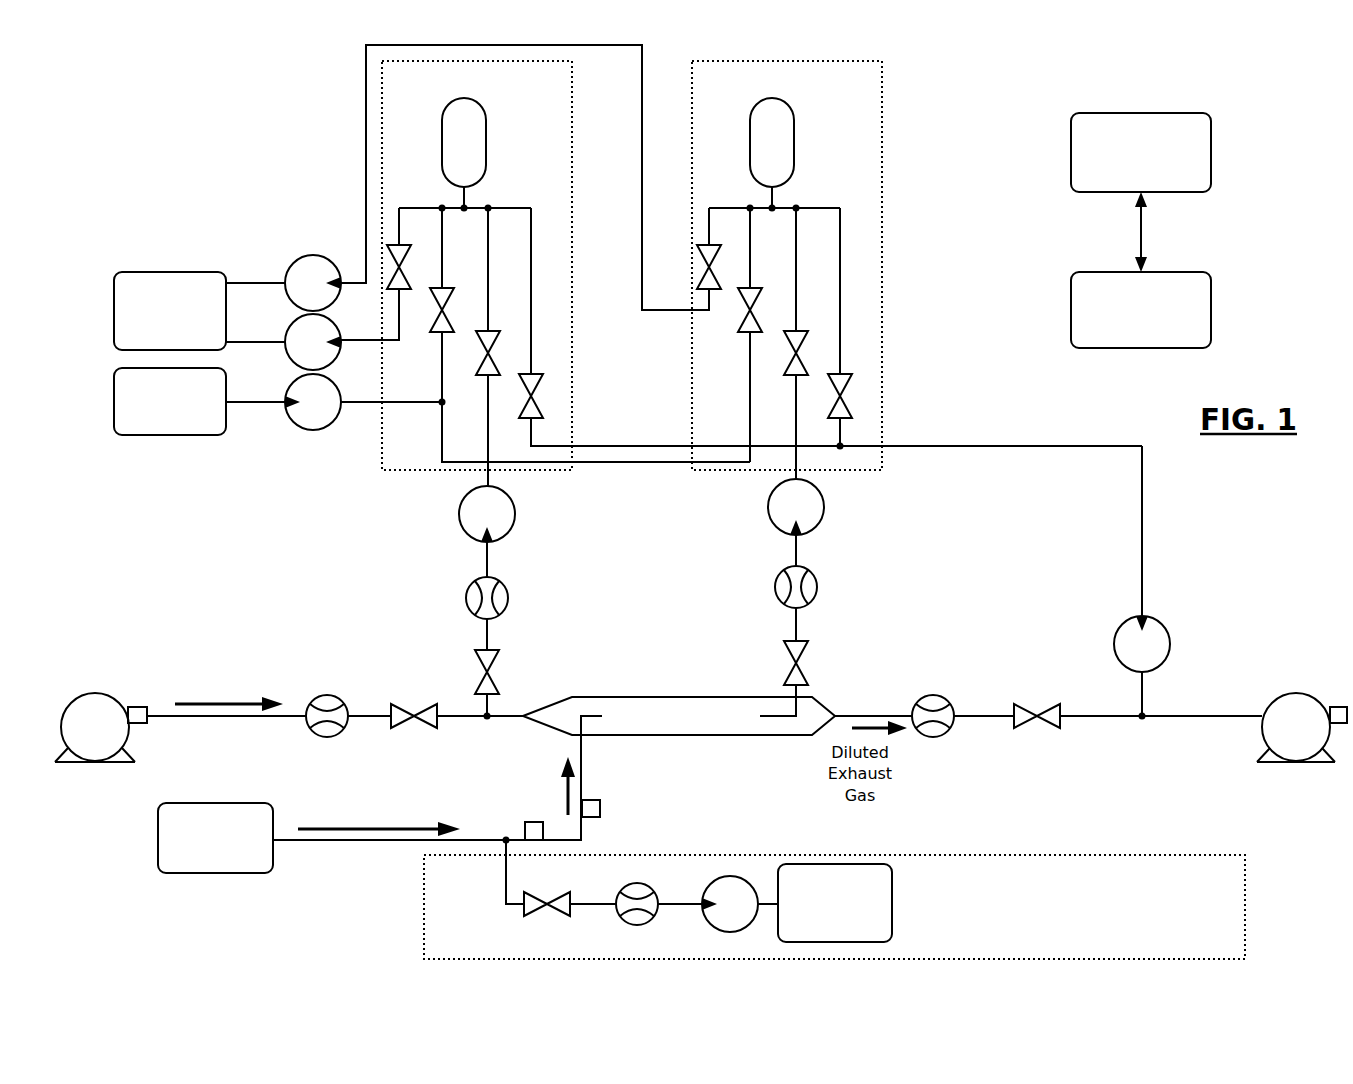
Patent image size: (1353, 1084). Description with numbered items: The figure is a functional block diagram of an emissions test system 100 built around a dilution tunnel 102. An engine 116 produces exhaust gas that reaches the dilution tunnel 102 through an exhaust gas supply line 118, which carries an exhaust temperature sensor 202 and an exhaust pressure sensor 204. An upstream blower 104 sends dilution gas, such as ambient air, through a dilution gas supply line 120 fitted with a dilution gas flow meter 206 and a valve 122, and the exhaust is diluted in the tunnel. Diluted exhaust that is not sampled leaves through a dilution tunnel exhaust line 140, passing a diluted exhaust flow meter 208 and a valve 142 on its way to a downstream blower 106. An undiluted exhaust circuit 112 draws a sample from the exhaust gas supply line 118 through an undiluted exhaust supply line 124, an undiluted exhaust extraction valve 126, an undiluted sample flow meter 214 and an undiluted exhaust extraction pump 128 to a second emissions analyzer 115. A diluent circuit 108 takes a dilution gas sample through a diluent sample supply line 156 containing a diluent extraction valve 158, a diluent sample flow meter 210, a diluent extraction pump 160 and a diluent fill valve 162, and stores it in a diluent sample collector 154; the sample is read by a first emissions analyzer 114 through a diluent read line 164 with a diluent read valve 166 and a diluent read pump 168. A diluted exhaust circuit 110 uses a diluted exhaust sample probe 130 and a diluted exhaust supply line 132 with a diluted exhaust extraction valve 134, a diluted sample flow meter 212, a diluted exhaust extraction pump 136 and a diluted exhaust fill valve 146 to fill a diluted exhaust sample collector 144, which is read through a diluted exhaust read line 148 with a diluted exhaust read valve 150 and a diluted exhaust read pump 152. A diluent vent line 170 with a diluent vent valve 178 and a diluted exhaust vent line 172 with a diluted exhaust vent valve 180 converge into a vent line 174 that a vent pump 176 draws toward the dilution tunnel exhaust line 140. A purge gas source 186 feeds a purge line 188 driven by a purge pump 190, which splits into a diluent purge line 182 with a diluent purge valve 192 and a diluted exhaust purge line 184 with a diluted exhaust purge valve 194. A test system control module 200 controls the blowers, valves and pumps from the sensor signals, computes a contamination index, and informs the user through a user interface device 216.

The emissions test system 100 is at (195, 66).
The dilution tunnel 102 is at (682, 693).
The upstream blower 104 is at (96, 693).
The downstream blower 106 is at (1275, 702).
The diluent circuit 108 is at (572, 112).
The diluted exhaust circuit 110 is at (882, 112).
The undiluted exhaust circuit 112 is at (1143, 854).
The first emissions analyzer 114 is at (168, 272).
The second emissions analyzer 115 is at (893, 883).
The engine 116 is at (222, 875).
The exhaust gas supply line 118 is at (373, 842).
The dilution gas supply line 120 is at (247, 717).
The valve 122 is at (405, 726).
The undiluted exhaust supply line 124 is at (505, 872).
The undiluted exhaust extraction valve 126 is at (523, 912).
The undiluted exhaust extraction pump 128 is at (707, 923).
The diluted exhaust sample probe 130 is at (780, 717).
The diluted exhaust supply line 132 is at (798, 552).
The diluted exhaust extraction valve 134 is at (805, 673).
The diluted exhaust extraction pump 136 is at (820, 500).
The dilution tunnel exhaust line 140 is at (1202, 718).
The valve 142 is at (1050, 728).
The diluted exhaust sample collector 144 is at (795, 158).
The diluted exhaust fill valve 146 is at (794, 377).
The diluted exhaust read line 148 is at (707, 302).
The diluted exhaust read valve 150 is at (703, 278).
The diluted exhaust read pump 152 is at (290, 257).
The diluent sample collector 154 is at (487, 158).
The diluent sample supply line 156 is at (482, 563).
The diluent extraction valve 158 is at (478, 683).
The diluent extraction pump 160 is at (460, 505).
The diluent fill valve 162 is at (485, 376).
The diluent read line 164 is at (398, 317).
The diluent read valve 166 is at (397, 289).
The diluent read pump 168 is at (290, 318).
The diluent vent line 170 is at (532, 432).
The diluted exhaust vent line 172 is at (842, 432).
The vent line 174 is at (1144, 557).
The vent pump 176 is at (1115, 640).
The diluent vent valve 178 is at (537, 406).
The diluted exhaust vent valve 180 is at (845, 407).
The diluent purge line 182 is at (440, 378).
The diluted exhaust purge line 184 is at (748, 379).
The purge gas source 186 is at (170, 435).
The purge line 188 is at (270, 403).
The purge pump 190 is at (290, 380).
The diluent purge valve 192 is at (441, 333).
The diluted exhaust purge valve 194 is at (748, 333).
The test system control module 200 is at (1211, 130).
The exhaust temperature sensor 202 is at (525, 822).
The exhaust pressure sensor 204 is at (600, 815).
The dilution gas flow meter 206 is at (335, 737).
The diluted exhaust flow meter 208 is at (938, 737).
The diluent sample flow meter 210 is at (467, 600).
The diluted sample flow meter 212 is at (818, 583).
The undiluted sample flow meter 214 is at (620, 912).
The user interface device 216 is at (1211, 290).